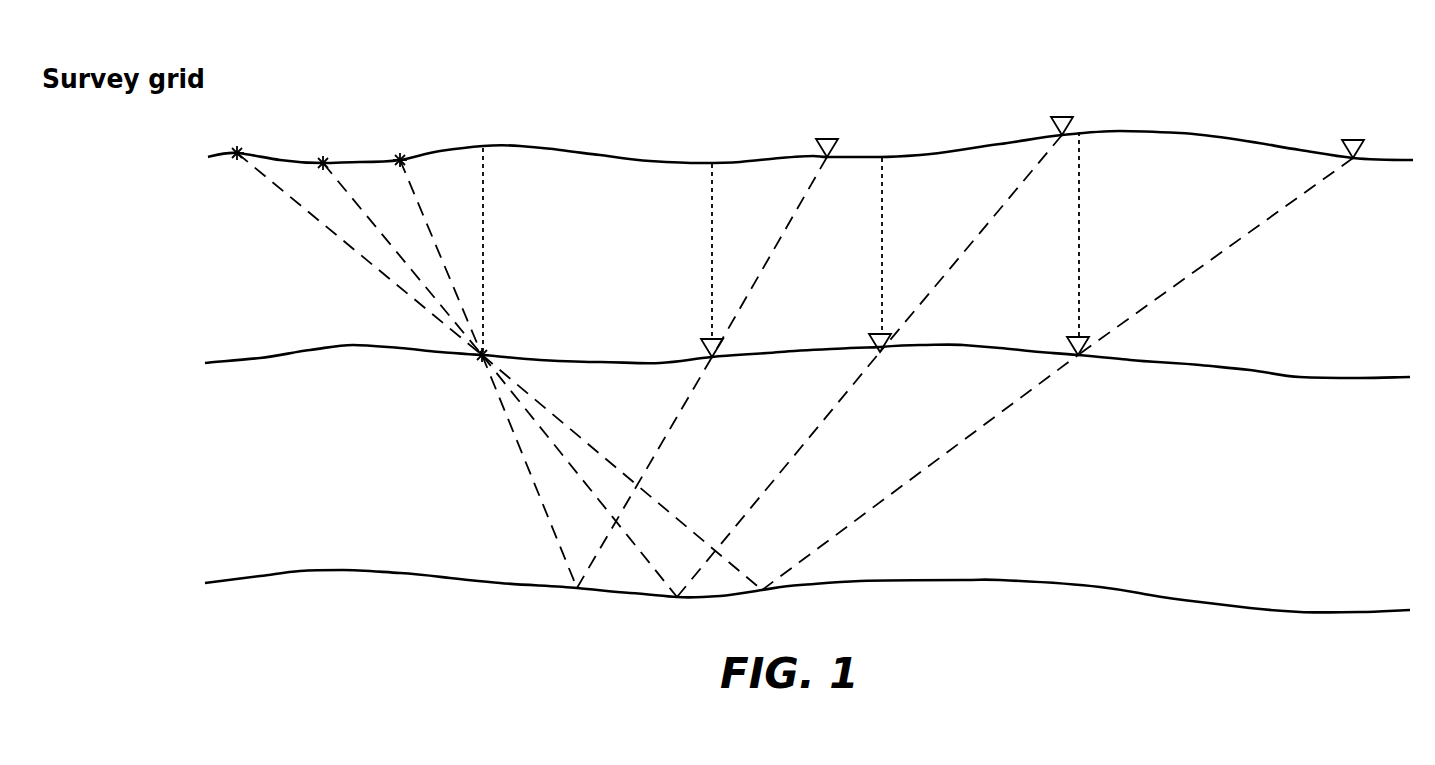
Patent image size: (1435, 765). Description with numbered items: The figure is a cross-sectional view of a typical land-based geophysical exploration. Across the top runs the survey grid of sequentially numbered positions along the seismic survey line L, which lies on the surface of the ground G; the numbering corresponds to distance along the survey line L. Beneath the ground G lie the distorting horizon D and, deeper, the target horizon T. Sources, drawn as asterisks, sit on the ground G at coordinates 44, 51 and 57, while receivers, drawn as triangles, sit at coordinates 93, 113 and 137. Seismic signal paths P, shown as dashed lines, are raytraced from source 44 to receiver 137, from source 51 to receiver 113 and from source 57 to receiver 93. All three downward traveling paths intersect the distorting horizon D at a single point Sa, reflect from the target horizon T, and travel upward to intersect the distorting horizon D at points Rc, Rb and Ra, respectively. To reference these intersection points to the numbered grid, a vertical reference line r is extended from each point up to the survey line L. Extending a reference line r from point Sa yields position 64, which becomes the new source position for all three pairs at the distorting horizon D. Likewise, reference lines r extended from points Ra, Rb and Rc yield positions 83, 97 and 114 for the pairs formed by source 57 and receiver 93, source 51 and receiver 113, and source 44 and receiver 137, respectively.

The source 44 is at (352, 209).
The source 51 is at (395, 209).
The source 57 is at (433, 209).
The position 64 is at (485, 209).
The position 83 is at (715, 202).
The receiver 93 is at (780, 210).
The position 97 is at (883, 199).
The receiver 113 is at (976, 208).
The position 114 is at (1105, 201).
The receiver 137 is at (1232, 209).
The ground G is at (795, 151).
The distorting horizon D is at (793, 362).
The target horizon T is at (794, 591).
The seismic survey line L is at (645, 148).
The vertical reference line r is at (484, 207).
The seismic signal path P is at (537, 495).
The point Sa is at (482, 360).
The point Ra is at (712, 360).
The point Rb is at (880, 356).
The point Rc is at (1078, 358).